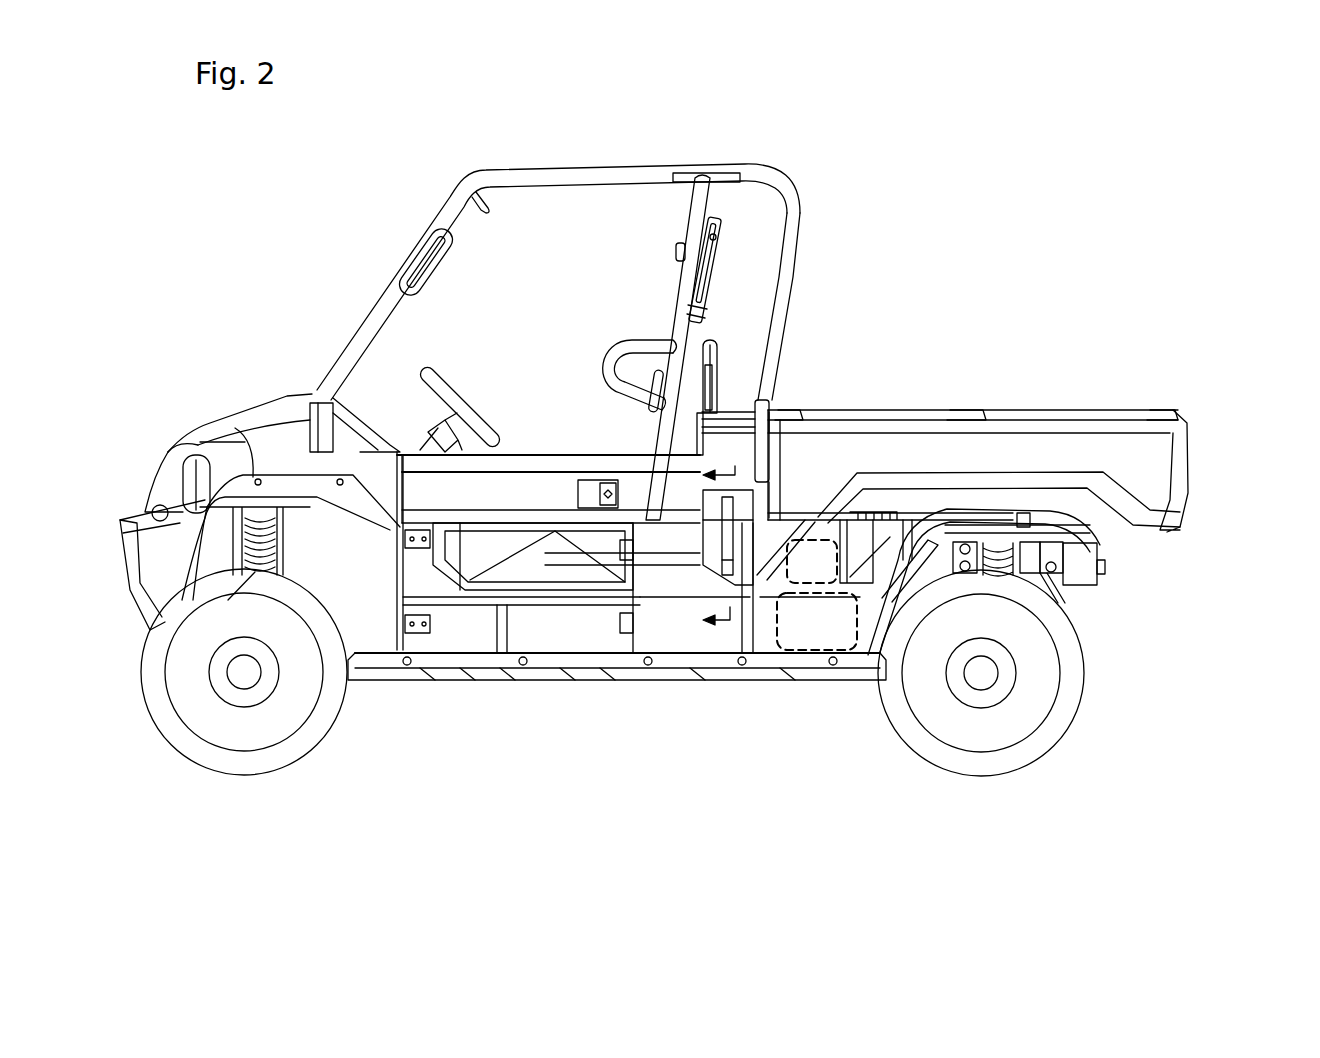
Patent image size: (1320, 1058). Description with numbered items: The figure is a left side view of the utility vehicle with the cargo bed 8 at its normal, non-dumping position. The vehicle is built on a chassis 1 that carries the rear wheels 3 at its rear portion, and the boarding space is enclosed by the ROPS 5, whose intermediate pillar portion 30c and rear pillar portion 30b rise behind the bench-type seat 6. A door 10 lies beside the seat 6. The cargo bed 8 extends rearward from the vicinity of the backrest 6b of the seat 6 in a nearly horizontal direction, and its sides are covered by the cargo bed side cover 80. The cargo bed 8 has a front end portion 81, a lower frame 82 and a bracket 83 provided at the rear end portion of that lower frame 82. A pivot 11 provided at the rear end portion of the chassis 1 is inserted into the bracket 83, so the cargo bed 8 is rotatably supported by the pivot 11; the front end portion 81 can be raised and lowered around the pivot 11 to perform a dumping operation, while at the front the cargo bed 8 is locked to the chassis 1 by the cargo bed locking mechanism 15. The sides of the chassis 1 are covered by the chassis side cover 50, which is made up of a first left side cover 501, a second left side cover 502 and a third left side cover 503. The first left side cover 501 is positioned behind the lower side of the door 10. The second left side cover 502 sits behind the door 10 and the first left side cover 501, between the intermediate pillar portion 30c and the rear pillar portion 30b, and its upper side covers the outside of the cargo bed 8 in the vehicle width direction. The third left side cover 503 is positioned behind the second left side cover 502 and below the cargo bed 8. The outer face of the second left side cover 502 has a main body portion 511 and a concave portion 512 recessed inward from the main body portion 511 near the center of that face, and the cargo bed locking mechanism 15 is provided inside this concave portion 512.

The chassis 1 is at (1082, 596).
The rear wheels 3 is at (1070, 713).
The ROPS 5 is at (810, 176).
The seat 6 is at (600, 440).
The backrest 6b is at (658, 418).
The cargo bed 8 is at (1027, 414).
The door 10 is at (513, 490).
The pivot 11 is at (1050, 525).
The cargo bed locking mechanism 15 is at (722, 530).
The rear pillar portion 30b is at (800, 252).
The intermediate pillar portion 30c is at (697, 230).
The chassis side cover 50 is at (646, 665).
The first left side cover 501 is at (585, 625).
The second left side cover 502 is at (652, 630).
The third left side cover 503 is at (823, 669).
The main body portion 511 is at (680, 573).
The concave portion 512 is at (707, 573).
The cargo bed side cover 80 is at (1133, 467).
The front end portion 81 is at (718, 398).
The lower frame 82 is at (1027, 517).
The bracket 83 is at (1110, 563).